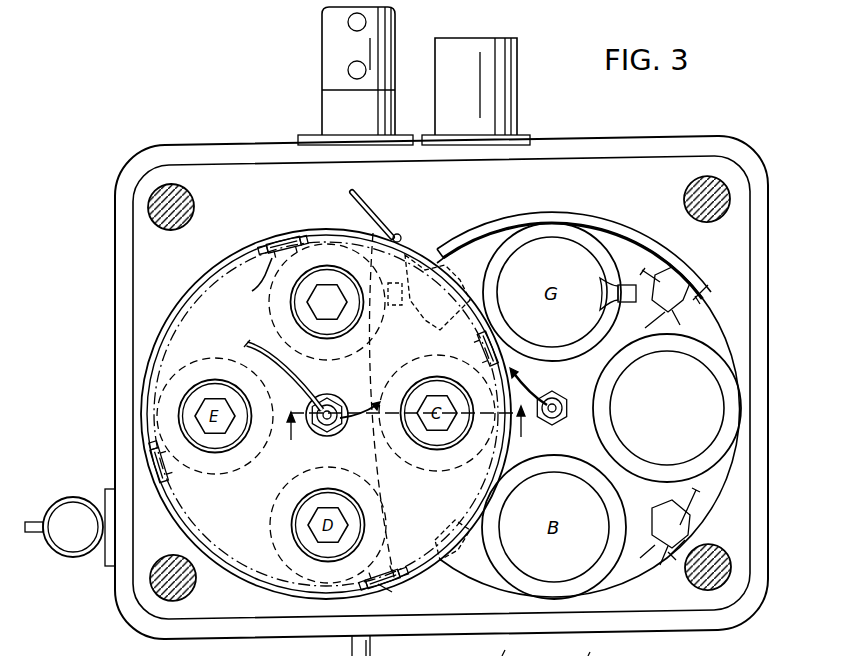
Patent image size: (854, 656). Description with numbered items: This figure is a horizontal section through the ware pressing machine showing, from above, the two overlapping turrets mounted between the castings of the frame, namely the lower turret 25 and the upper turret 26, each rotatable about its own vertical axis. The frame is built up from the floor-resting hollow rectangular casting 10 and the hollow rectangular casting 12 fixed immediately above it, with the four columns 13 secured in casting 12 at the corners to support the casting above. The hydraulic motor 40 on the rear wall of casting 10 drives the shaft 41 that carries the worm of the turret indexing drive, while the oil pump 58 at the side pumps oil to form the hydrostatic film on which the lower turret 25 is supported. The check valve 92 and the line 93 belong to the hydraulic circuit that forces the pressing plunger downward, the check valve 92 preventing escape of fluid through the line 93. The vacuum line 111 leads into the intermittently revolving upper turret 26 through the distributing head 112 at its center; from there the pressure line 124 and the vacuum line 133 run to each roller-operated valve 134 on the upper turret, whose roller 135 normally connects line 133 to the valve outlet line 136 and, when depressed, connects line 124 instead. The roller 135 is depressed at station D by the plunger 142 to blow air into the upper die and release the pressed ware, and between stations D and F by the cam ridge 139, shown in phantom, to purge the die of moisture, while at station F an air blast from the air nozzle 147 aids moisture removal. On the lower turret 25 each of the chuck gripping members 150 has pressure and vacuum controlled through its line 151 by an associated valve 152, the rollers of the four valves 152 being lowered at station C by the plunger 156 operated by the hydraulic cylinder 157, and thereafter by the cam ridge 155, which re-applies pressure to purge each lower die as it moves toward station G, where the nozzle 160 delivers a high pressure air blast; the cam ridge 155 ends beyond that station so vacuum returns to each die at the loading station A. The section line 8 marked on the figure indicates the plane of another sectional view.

The section line 8- 8 is at (409, 436).
The hollow rectangular casting 10 is at (140, 628).
The hollow rectangular casting 12 is at (248, 617).
The columns 13 is at (191, 199).
The lower turret 25 is at (728, 480).
The upper turret 26 is at (188, 297).
The hydraulic motor 40 is at (330, 65).
The shaft 41 is at (372, 650).
The oil pump 58 is at (86, 496).
The check valve 92 is at (517, 649).
The line 93 is at (601, 650).
The vacuum line 111 is at (264, 336).
The distributing head 112 is at (339, 389).
The line 124 is at (256, 256).
The line 133 is at (246, 285).
The valve 134 is at (284, 240).
The roller 135 is at (386, 591).
The valve outlet line 136 is at (298, 243).
The cam ridge 139 is at (176, 335).
The plunger 142 is at (368, 577).
The air nozzle 147 is at (353, 275).
The chuck gripping members 150 is at (712, 452).
The line 151 is at (696, 303).
The valve 152 is at (684, 277).
The cam ridge 155 is at (652, 202).
The plunger 156 is at (425, 258).
The hydraulic cylinder 157 is at (428, 219).
The nozzle 160 is at (601, 290).